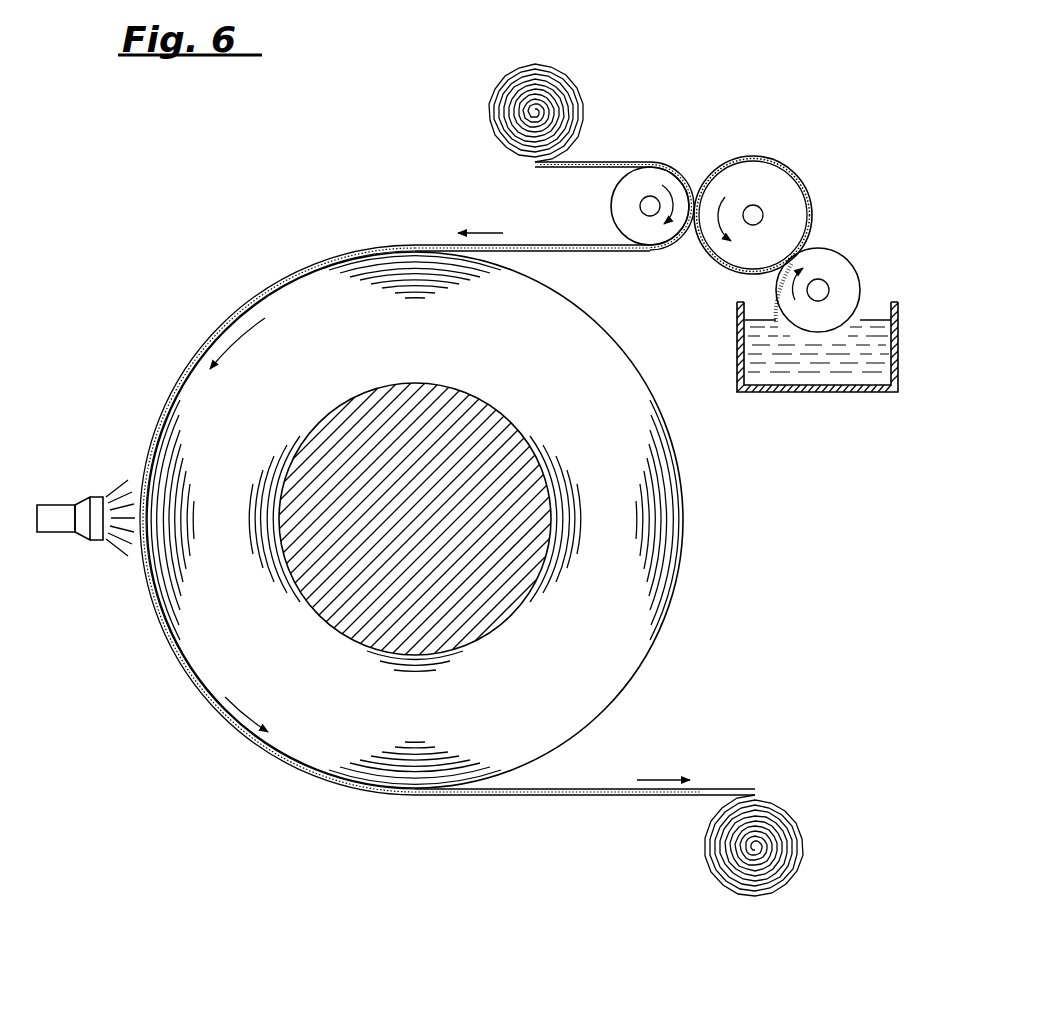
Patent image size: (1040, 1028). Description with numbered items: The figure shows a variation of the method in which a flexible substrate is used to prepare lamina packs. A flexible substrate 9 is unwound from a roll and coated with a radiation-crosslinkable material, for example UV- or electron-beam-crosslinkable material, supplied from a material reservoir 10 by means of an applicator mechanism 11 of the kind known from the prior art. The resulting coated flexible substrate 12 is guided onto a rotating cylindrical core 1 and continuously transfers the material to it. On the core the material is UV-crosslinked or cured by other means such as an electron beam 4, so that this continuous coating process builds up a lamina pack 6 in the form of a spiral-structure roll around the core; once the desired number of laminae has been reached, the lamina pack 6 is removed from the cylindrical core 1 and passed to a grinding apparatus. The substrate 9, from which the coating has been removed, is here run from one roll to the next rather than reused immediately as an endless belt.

The cylindrical core 1 is at (345, 447).
The electron beam 4 is at (60, 525).
The lamina pack 6 is at (175, 585).
The flexible substrate 9 is at (603, 162).
The material reservoir 10 is at (832, 377).
The applicator mechanism 11 is at (822, 204).
The coated flexible substrate 12 is at (562, 238).